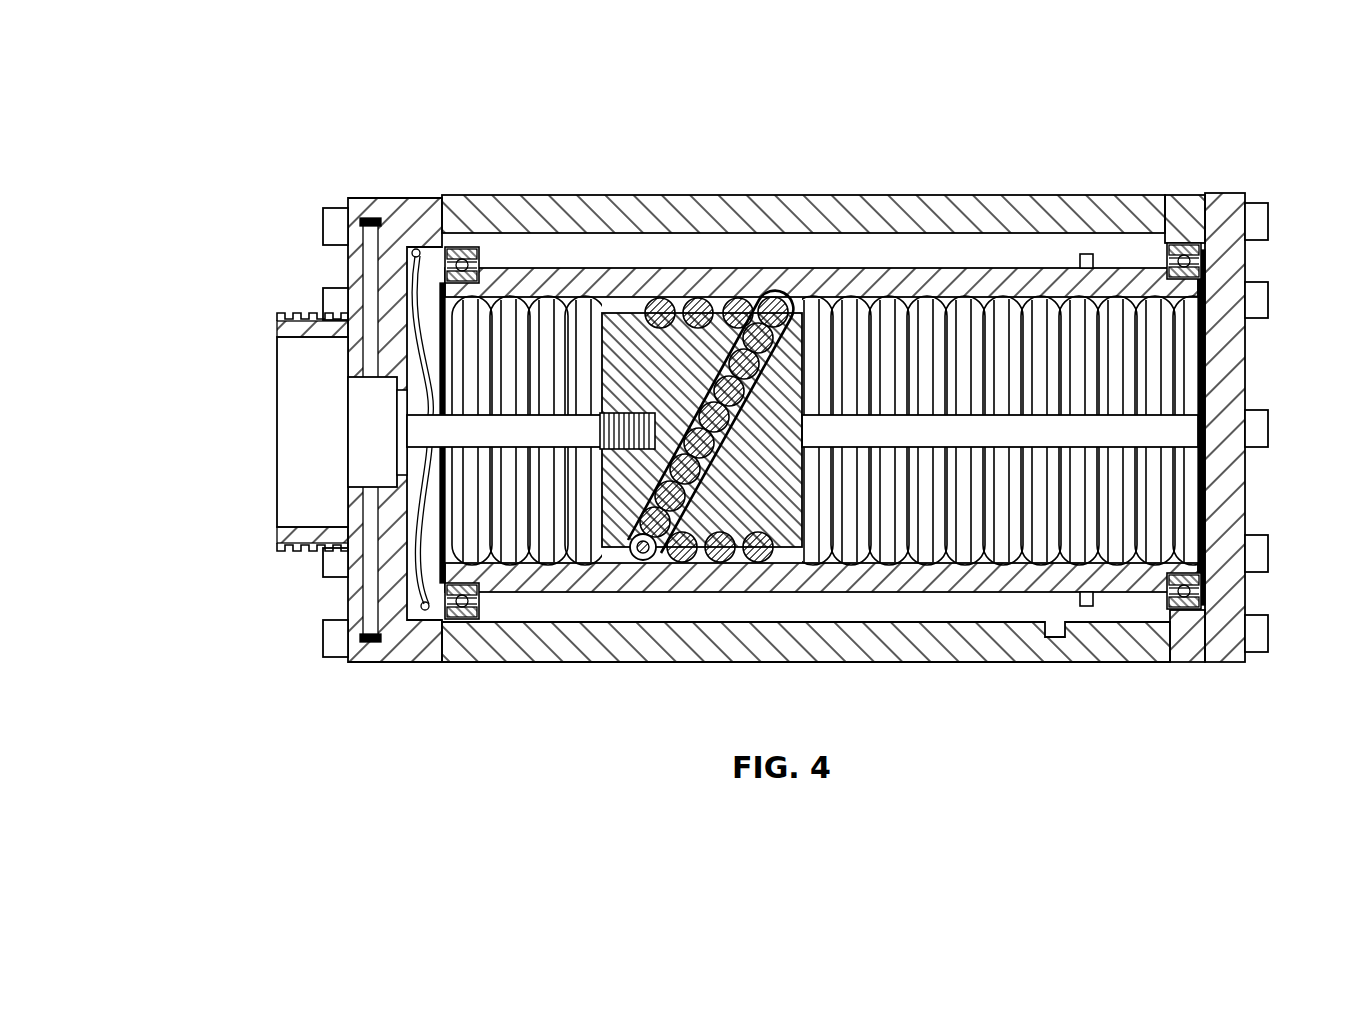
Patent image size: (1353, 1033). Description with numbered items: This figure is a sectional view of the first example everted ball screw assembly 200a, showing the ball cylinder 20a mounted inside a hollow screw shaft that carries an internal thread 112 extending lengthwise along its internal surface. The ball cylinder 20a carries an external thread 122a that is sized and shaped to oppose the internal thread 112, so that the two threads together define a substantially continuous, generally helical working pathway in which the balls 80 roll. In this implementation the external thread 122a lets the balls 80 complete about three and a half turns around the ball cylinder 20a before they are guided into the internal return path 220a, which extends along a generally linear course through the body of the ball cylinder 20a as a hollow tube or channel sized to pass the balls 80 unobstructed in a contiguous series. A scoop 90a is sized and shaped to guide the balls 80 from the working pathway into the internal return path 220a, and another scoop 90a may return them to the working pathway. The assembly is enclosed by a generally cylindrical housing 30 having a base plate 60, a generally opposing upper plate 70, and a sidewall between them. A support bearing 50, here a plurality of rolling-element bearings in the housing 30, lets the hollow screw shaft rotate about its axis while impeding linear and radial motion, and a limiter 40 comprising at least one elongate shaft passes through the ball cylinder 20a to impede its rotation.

The everted ball screw assembly 200a is at (336, 119).
The upper plate 70 is at (346, 268).
The housing 30 is at (960, 194).
The base plate 60 is at (1247, 360).
The limiter 40 is at (967, 430).
The ball cylinder 20a is at (628, 312).
The internal thread 112 is at (1158, 325).
The balls 80 is at (720, 354).
The internal return path 220a is at (740, 298).
The external thread 122a is at (719, 572).
The scoop 90a is at (638, 570).
The support bearing 50 is at (455, 247).